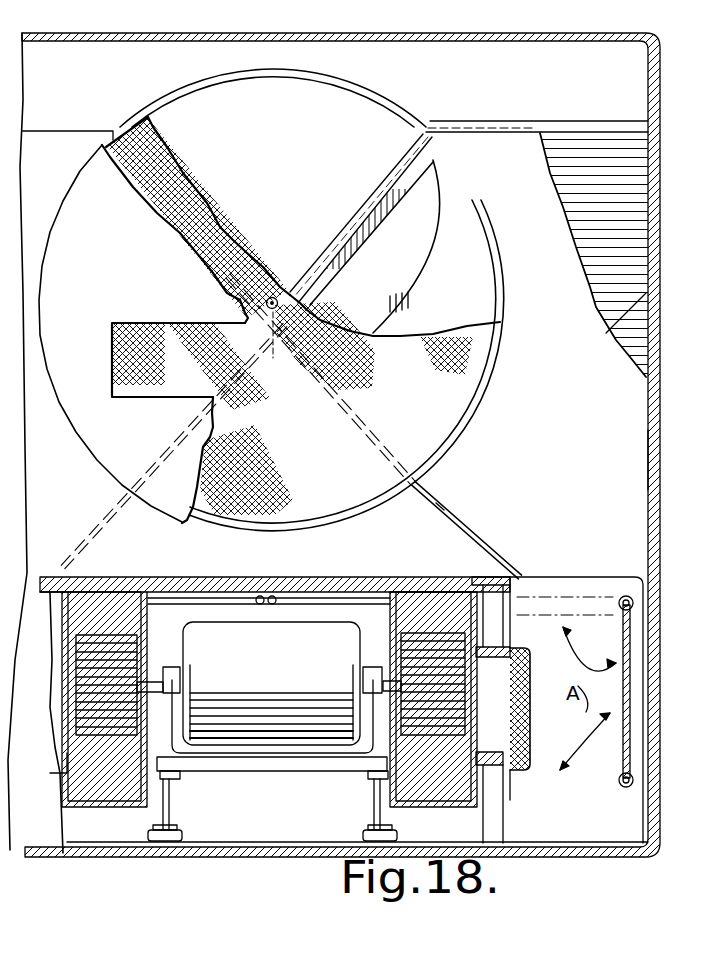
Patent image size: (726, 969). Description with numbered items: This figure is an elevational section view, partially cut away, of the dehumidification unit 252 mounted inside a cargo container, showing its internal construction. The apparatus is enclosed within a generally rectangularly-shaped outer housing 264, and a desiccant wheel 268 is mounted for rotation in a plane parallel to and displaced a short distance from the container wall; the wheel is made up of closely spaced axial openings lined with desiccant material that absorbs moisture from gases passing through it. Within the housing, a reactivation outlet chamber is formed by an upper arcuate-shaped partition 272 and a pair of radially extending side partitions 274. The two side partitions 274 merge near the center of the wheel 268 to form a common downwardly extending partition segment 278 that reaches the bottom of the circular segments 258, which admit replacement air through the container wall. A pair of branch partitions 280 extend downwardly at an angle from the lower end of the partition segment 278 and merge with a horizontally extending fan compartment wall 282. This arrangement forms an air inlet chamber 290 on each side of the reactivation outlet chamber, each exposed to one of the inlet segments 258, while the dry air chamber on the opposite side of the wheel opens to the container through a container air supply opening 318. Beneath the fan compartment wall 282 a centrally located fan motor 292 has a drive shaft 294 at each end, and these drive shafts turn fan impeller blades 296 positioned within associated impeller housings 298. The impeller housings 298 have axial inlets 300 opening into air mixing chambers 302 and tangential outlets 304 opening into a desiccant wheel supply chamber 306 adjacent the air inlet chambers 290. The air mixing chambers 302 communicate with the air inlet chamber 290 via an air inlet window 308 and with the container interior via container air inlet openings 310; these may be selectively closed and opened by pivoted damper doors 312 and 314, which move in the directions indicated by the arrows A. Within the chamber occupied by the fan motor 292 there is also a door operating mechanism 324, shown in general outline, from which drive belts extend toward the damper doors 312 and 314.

The dehumidification unit 252 is at (682, 66).
The upper arcuate-shaped partition 272 is at (395, 103).
The radially extending side partitions 274 is at (157, 216).
The circular segments 258 is at (418, 245).
The desiccant wheel 268 is at (438, 335).
The container air supply opening 318 is at (142, 330).
The downwardly extending partition segment 278 is at (256, 323).
The branch partitions 280 is at (110, 536).
The desiccant wheel supply chamber 306 is at (440, 500).
The outer housing 264 is at (656, 333).
The air inlet chamber 290 is at (630, 460).
The fan compartment wall 282 is at (348, 580).
The tangential outlets 304 is at (135, 580).
The door operating mechanism 324 is at (280, 580).
The impeller housings 298 is at (96, 810).
The fan impeller blades 296 is at (113, 635).
The drive shaft 294 is at (160, 682).
The fan motor 292 is at (272, 747).
The axial inlets 300 is at (53, 712).
The air mixing chambers 302 is at (53, 577).
The air inlet window 308 is at (616, 573).
The container air inlet openings 310 is at (653, 685).
The upper damper door 312 is at (623, 632).
The damper door 314 is at (626, 747).